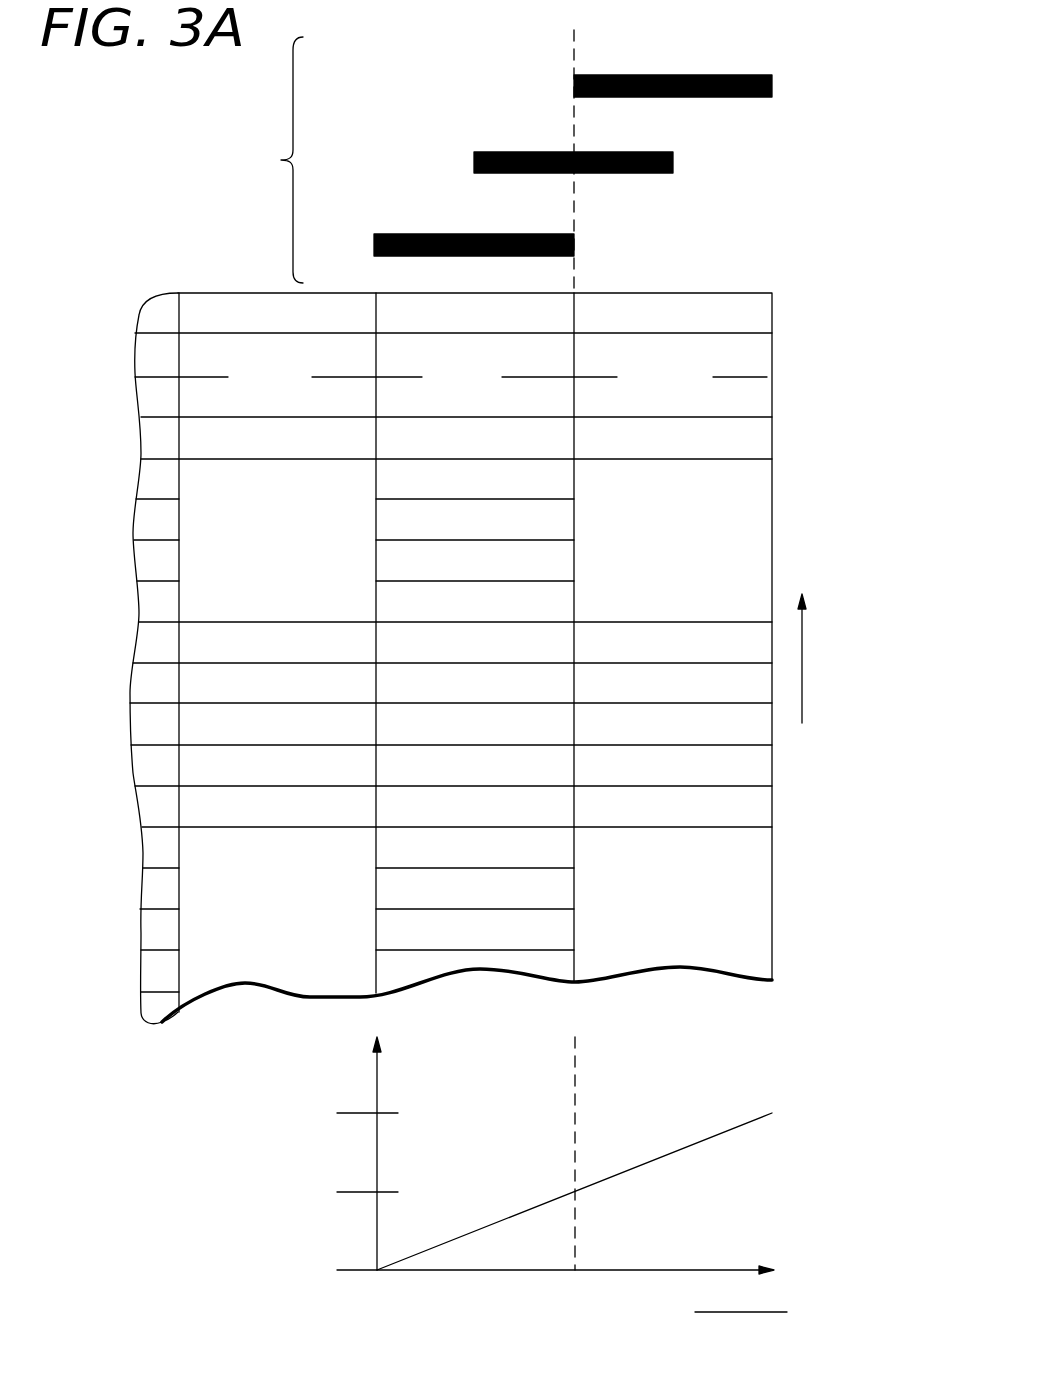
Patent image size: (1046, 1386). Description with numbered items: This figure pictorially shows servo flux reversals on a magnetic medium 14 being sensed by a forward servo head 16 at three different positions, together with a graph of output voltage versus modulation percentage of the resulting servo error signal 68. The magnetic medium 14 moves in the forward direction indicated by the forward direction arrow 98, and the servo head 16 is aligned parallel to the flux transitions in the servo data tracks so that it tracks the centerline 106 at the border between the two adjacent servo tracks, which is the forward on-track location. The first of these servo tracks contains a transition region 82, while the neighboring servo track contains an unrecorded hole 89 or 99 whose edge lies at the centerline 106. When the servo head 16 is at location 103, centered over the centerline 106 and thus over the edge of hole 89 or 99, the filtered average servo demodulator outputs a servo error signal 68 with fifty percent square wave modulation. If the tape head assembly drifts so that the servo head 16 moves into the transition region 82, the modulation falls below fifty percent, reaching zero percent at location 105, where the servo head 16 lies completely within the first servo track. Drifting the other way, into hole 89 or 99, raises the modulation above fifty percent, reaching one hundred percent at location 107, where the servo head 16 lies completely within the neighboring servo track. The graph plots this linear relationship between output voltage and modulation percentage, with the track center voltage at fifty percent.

The magnetic medium 14 is at (138, 360).
The servo head 16 is at (143, 156).
The servo error signal 68 is at (194, 1247).
The transition region 82 is at (190, 720).
The hole 89 is at (757, 527).
The forward direction arrow 98 is at (804, 656).
The hole 99 is at (740, 901).
The location 103 is at (677, 162).
The location 105 is at (372, 240).
The centerline 106 is at (575, 42).
The location 107 is at (775, 84).